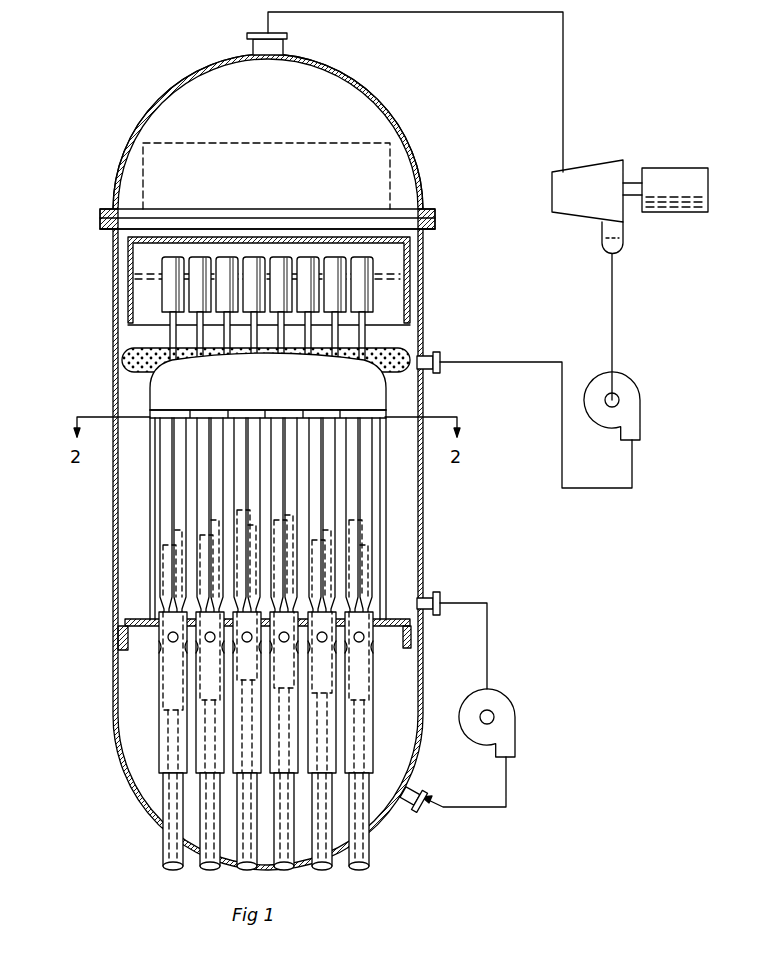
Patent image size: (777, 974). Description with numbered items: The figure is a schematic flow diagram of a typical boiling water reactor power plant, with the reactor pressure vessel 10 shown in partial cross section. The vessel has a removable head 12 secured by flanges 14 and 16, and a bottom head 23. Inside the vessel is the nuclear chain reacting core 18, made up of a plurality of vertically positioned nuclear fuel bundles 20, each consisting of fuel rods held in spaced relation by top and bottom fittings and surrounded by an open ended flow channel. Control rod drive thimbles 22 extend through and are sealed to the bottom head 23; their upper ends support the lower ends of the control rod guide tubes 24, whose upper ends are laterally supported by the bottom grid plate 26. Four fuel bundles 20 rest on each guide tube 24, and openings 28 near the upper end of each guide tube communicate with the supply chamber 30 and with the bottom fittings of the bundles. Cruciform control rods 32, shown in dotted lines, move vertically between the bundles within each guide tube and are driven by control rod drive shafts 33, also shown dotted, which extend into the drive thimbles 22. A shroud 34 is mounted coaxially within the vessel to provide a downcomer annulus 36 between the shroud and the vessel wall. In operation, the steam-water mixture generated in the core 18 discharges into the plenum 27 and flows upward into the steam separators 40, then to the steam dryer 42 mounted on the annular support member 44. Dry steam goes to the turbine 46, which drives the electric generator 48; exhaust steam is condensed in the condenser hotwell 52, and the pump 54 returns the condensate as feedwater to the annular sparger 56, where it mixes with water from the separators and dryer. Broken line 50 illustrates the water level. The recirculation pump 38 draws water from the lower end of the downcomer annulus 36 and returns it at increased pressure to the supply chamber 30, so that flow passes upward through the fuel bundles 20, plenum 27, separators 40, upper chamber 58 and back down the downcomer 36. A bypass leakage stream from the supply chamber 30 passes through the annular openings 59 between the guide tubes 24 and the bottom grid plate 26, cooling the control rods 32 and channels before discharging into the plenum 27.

The reactor pressure vessel 10 is at (420, 497).
The removable head 12 is at (350, 80).
The flange 14 is at (437, 212).
The flange 16 is at (437, 226).
The nuclear chain reacting core 18 is at (280, 503).
The nuclear fuel bundles 20 is at (175, 490).
The control rod drive thimbles 22 is at (210, 836).
The bottom head 23 is at (398, 812).
The control rod guide tubes 24 is at (195, 683).
The bottom grid plate 26 is at (128, 638).
The plenum 27 is at (280, 393).
The openings 28 is at (170, 640).
The supply chamber 30 is at (149, 716).
The control rods 32 is at (215, 574).
The control rod drive shafts 33 is at (200, 795).
The shroud 34 is at (150, 478).
The downcomer annulus 36 is at (149, 516).
The recirculation pump 38 is at (515, 700).
The steam separators 40 is at (205, 295).
The steam dryer 42 is at (395, 140).
The annular support member 44 is at (128, 256).
The turbine 46 is at (600, 160).
The electric generator 48 is at (668, 168).
The broken line illustrating water level 50 is at (390, 275).
The condenser hotwell 52 is at (627, 245).
The pump 54 is at (632, 380).
The annular sparger 56 is at (124, 362).
The upper chamber 58 is at (160, 313).
The annular openings 59 is at (340, 622).